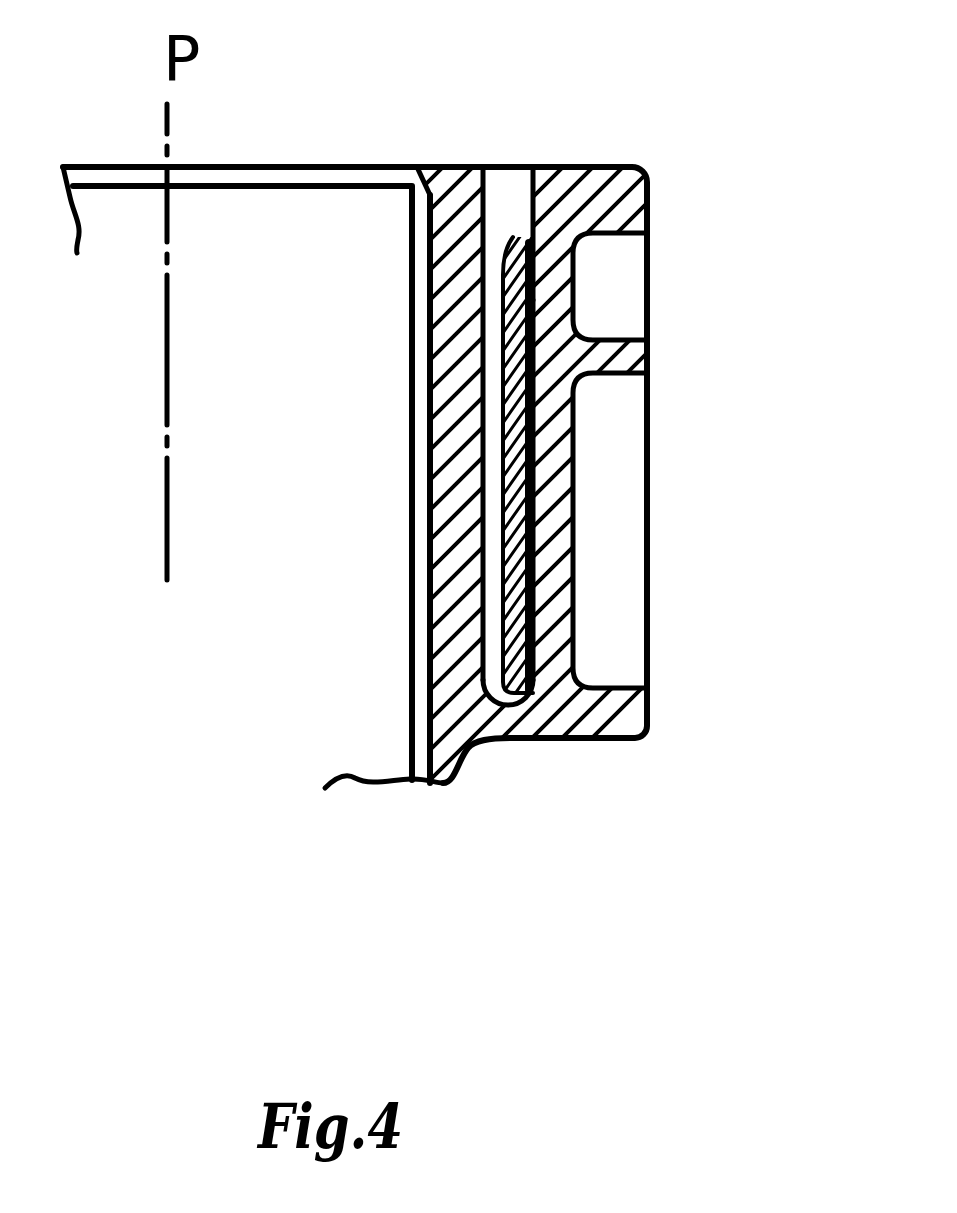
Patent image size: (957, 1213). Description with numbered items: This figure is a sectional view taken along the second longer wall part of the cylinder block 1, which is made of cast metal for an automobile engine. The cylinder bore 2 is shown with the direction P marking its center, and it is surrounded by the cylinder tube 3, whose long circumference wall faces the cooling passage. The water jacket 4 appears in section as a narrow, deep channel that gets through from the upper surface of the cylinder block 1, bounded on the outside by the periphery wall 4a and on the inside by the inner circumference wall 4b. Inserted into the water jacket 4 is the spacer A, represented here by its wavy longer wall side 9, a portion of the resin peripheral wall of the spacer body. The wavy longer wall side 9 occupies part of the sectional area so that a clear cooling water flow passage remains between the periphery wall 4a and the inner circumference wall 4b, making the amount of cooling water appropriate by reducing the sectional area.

The cylinder block 1 is at (478, 606).
The cylinder bore 2 is at (335, 418).
The cylinder tube 3 is at (457, 288).
The water jacket 4 is at (611, 377).
The periphery wall 4a is at (527, 205).
The inner circumference wall 4b is at (483, 623).
The wavy longer wall side 9 is at (507, 428).